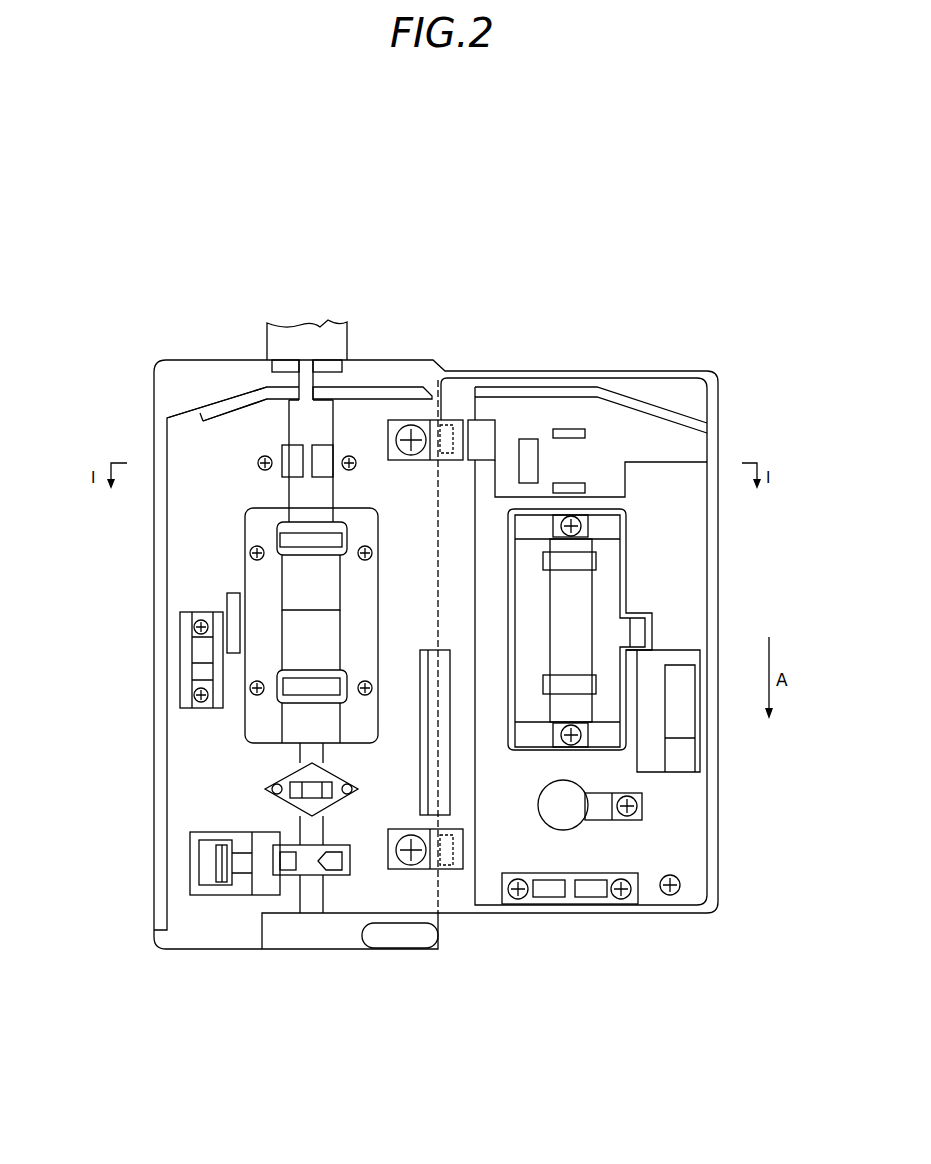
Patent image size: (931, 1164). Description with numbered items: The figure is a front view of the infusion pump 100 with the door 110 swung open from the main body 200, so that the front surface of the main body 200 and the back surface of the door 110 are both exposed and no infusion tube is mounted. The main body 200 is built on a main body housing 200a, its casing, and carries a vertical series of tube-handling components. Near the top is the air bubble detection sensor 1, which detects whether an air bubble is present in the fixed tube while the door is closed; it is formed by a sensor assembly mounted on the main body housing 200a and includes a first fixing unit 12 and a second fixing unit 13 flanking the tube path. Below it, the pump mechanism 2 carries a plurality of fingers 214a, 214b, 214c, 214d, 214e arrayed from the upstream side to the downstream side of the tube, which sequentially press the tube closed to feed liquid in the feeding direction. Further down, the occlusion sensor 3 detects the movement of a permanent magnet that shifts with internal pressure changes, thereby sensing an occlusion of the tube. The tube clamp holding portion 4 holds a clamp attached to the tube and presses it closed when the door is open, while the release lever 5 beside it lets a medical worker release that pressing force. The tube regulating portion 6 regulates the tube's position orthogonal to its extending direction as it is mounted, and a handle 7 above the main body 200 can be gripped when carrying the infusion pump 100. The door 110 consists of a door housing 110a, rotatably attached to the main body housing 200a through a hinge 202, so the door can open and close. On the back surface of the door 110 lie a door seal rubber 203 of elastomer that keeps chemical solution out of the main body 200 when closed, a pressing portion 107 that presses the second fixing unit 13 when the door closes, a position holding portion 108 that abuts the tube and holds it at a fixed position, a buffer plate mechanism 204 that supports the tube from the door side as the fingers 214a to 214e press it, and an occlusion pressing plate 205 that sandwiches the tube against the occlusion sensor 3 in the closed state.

The infusion pump 100 is at (475, 1026).
The main body 200 is at (148, 360).
The main body housing 200a is at (190, 430).
The air bubble detection sensor 1 is at (262, 477).
The pump mechanism 2 is at (262, 575).
The occlusion sensor 3 is at (264, 790).
The tube clamp holding portion 4 is at (334, 880).
The release lever 5 is at (220, 888).
The tube regulating portion 6 is at (303, 362).
The handle 7 is at (318, 333).
The first fixing unit 12 is at (290, 452).
The second fixing unit 13 is at (322, 453).
The finger 214a is at (282, 540).
The finger 214b is at (297, 587).
The finger 214c is at (282, 657).
The finger 214d is at (293, 703).
The finger 214e is at (300, 721).
The hinge 202 is at (436, 420).
The pressing portion 107 is at (524, 444).
The position holding portion 108 is at (565, 428).
The door seal rubber 203 is at (640, 412).
The door 110 is at (724, 366).
The buffer plate mechanism 204 is at (607, 589).
The occlusion pressing plate 205 is at (570, 820).
The door housing 110a is at (648, 870).